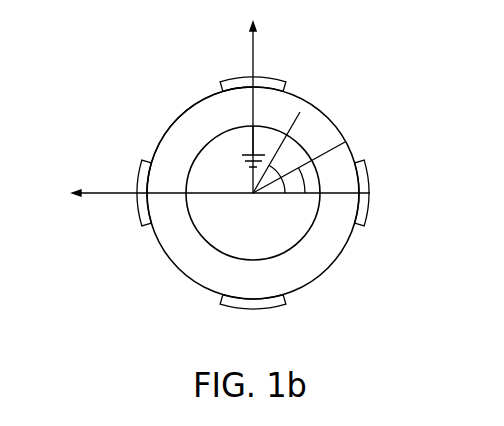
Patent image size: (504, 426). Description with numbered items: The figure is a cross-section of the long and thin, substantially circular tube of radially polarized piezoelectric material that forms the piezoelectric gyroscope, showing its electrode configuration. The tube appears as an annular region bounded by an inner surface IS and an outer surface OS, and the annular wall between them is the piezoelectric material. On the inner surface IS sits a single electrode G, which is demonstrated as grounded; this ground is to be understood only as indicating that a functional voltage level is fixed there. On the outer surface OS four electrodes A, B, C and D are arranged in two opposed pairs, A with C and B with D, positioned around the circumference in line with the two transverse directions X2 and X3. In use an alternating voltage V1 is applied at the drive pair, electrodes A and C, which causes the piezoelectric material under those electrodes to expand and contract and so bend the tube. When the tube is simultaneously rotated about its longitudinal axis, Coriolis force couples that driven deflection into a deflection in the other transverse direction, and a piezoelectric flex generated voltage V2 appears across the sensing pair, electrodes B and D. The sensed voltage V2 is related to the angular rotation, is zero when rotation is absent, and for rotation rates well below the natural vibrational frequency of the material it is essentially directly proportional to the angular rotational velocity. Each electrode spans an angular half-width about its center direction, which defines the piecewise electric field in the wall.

The outer surface OS is at (348, 80).
The inner surface IS is at (212, 140).
The piezoelectric tube wall P is at (210, 247).
The electrode G is at (303, 240).
The electrode A is at (238, 72).
The electrode B is at (135, 215).
The electrode C is at (282, 308).
The electrode D is at (372, 190).
The alternating voltage V1 is at (298, 77).
The piezoelectric flex generated voltage V2 is at (123, 147).
The x2 direction X2 is at (261, 96).
The x3 direction X3 is at (210, 202).